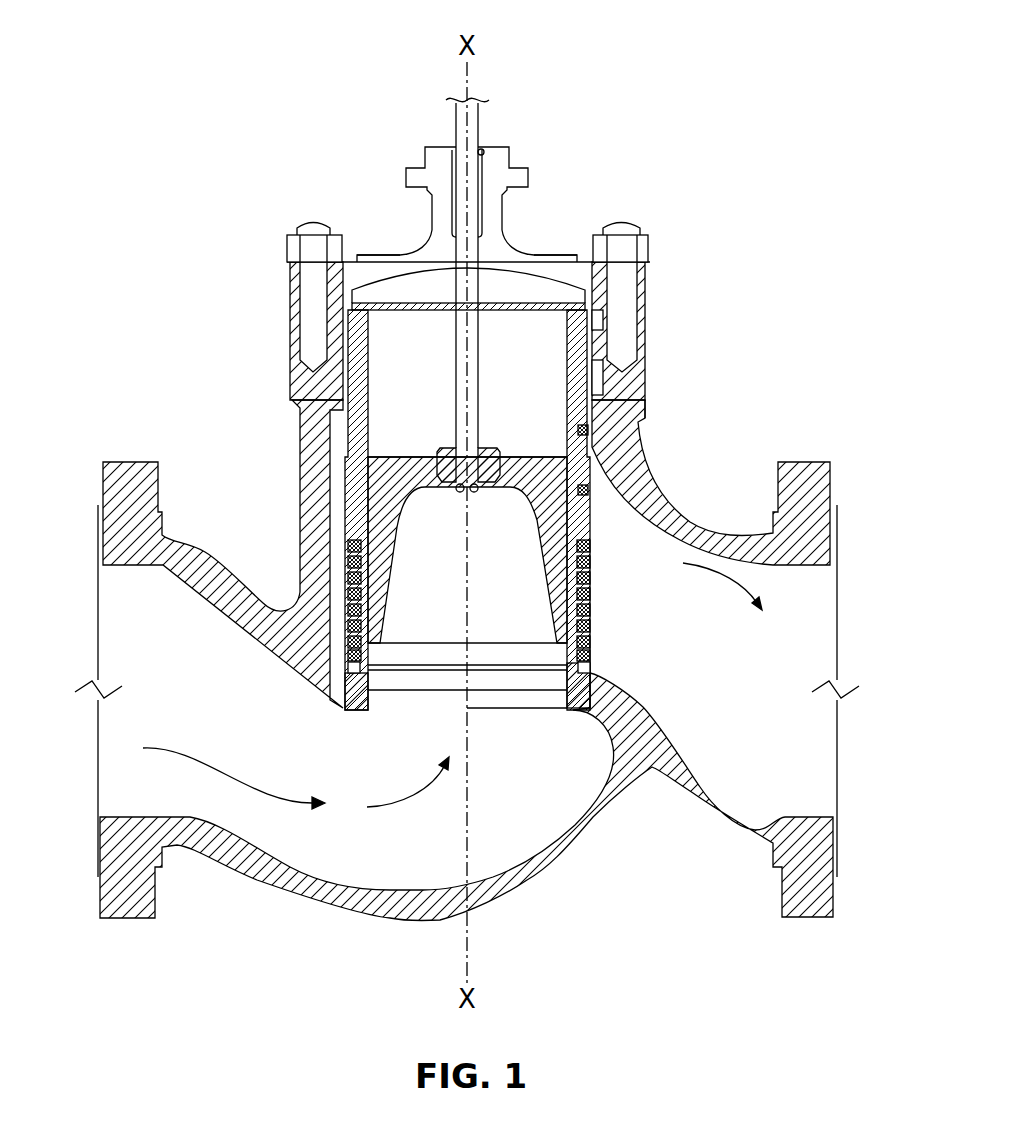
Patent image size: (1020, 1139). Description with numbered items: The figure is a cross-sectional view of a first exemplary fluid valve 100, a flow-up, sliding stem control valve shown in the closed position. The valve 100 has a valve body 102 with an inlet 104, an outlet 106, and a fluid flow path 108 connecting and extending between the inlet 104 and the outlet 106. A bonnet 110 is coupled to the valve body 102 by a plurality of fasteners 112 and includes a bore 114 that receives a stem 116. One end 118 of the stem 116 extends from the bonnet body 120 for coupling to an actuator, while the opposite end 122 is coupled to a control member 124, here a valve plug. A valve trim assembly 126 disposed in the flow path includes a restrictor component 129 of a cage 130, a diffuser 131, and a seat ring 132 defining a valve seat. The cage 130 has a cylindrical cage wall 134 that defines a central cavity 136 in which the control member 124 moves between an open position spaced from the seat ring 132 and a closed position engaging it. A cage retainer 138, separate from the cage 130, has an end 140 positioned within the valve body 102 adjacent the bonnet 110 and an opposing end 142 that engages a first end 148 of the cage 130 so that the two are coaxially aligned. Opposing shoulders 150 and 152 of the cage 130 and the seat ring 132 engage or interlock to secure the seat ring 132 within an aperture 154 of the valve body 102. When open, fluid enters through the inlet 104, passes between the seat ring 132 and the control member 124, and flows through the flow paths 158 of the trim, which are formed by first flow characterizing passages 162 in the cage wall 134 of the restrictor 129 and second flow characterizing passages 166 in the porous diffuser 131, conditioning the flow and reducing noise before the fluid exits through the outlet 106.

The fluid valve 100 is at (187, 55).
The valve body 102 is at (818, 460).
The inlet 104 is at (95, 712).
The outlet 106 is at (840, 712).
The fluid flow path 108 is at (182, 657).
The bonnet 110 is at (398, 260).
The fasteners 112 is at (305, 223).
The bore 114 is at (455, 163).
The stem 116 is at (476, 172).
The end of the stem 118 is at (463, 97).
The bonnet body 120 is at (493, 242).
The opposite end of the stem 122 is at (472, 447).
The control member 124 is at (370, 472).
The valve trim assembly 126 is at (638, 412).
The restrictor component 129 is at (386, 588).
The cage 130 is at (383, 472).
The diffuser 131 is at (589, 587).
The seat ring 132 is at (570, 703).
The cage wall 134 is at (592, 518).
The central cavity 136 is at (589, 617).
The cage retainer 138 is at (596, 392).
The end of the cage retainer 140 is at (603, 327).
The opposing end of the cage retainer 142 is at (583, 432).
The first end of the cage 148 is at (585, 490).
The shoulder of the cage 150 is at (590, 668).
The shoulder of the seat 152 is at (560, 677).
The aperture of the valve body 154 is at (367, 700).
The flow paths 158 is at (347, 555).
The first flow characterizing passages 162 is at (383, 627).
The second flow characterizing passages 166 is at (350, 588).